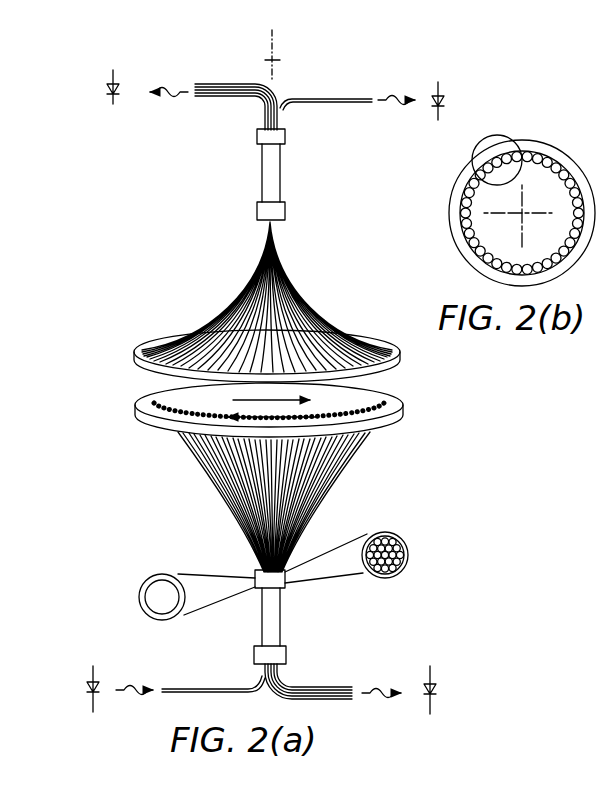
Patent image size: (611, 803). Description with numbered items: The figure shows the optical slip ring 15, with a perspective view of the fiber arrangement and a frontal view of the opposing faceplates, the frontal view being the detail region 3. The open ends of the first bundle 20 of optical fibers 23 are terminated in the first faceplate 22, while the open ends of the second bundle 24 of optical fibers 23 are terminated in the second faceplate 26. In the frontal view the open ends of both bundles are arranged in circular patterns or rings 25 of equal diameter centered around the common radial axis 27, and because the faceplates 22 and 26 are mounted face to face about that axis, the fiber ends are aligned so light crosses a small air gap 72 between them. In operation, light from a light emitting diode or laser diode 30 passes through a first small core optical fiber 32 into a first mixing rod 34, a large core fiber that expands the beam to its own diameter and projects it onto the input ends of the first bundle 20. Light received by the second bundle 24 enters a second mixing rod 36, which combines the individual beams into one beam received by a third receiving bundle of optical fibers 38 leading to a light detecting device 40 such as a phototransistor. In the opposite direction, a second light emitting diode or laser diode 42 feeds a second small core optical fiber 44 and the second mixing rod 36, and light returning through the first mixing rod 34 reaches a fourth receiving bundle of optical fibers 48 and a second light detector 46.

In FIG. 2A, the fiber optic connector assembly 15 is at (128, 320).
In FIG. 2A, the first bundle of optical fibers 20 is at (246, 326).
In FIG. 2A, the first faceplate 22 is at (148, 352).
In FIG. 2B, the first faceplate 22 is at (538, 142).
In FIG. 2B, the optical fibers 23 is at (462, 218).
In FIG. 2A, the second bundle of optical fibers 24 is at (300, 478).
In FIG. 2B, the circular pattern 25 is at (452, 239).
In FIG. 2A, the second faceplate 26 is at (385, 418).
In FIG. 2B, the second faceplate 26 is at (522, 213).
In FIG. 2A, the common radial axis 27 is at (275, 60).
In FIG. 2B, the common radial axis 27 is at (520, 216).
In FIG. 2B, the detail region 3 is at (500, 126).
In FIG. 2A, the light emitting diode or laser diode 30 is at (430, 104).
In FIG. 2A, the first small core optical fiber 32 is at (322, 98).
In FIG. 2A, the first mixing rod 34 is at (272, 178).
In FIG. 2A, the second mixing rod 36 is at (272, 622).
In FIG. 2A, the third receiving bundle of optical fibers 38 is at (308, 686).
In FIG. 2A, the light detecting device 40 is at (438, 688).
In FIG. 2A, the second light emitting diode or laser diode 42 is at (90, 686).
In FIG. 2A, the second small core optical fiber 44 is at (208, 688).
In FIG. 2A, the second light detector 46 is at (106, 96).
In FIG. 2A, the fourth receiving bundle of optical fibers 48 is at (234, 84).
In FIG. 2A, the small air gap 72 is at (150, 390).